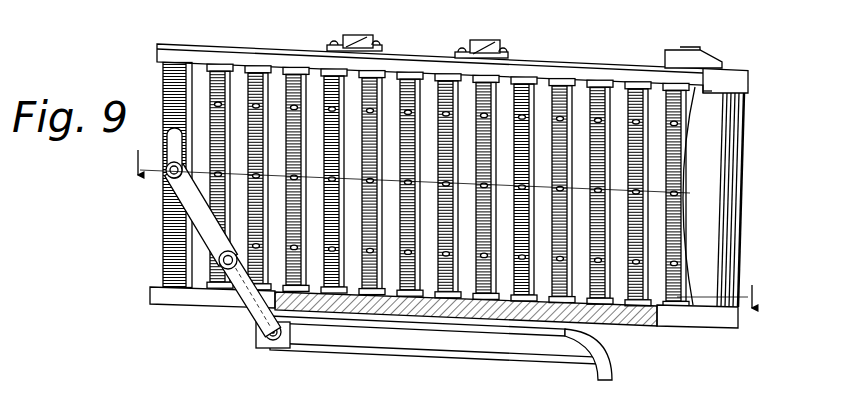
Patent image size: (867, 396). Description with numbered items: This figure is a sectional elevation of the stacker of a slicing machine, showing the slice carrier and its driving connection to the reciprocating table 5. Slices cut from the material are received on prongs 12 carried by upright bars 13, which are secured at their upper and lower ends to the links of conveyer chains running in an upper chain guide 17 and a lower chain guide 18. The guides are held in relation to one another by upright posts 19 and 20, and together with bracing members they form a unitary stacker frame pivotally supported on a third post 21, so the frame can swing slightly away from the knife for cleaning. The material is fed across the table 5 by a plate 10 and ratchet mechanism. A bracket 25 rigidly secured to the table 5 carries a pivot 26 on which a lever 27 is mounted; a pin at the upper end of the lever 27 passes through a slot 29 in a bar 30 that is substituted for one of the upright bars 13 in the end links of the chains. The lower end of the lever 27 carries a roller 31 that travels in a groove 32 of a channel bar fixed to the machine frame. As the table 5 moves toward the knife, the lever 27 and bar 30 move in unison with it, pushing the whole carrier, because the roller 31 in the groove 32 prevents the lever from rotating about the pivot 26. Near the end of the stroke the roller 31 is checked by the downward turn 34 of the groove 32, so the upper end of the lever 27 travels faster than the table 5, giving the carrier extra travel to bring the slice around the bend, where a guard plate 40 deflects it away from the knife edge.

The reciprocating table 5 is at (450, 308).
The plate 10 is at (443, 229).
The prongs 12 is at (408, 125).
The upright bars 13 is at (493, 98).
The chain guide 17 is at (595, 70).
The chain guide 18 is at (667, 312).
The upright post 19 is at (487, 41).
The upright post 20 is at (676, 50).
The third post 21 is at (360, 30).
The bracket 25 is at (250, 300).
The pivot 26 is at (222, 267).
The lever 27 is at (205, 212).
The slot 29 is at (172, 143).
The bar 30 is at (162, 82).
The roller 31 is at (283, 346).
The groove 32 is at (353, 340).
The turn 34 is at (598, 360).
The guard plate 40 is at (717, 216).